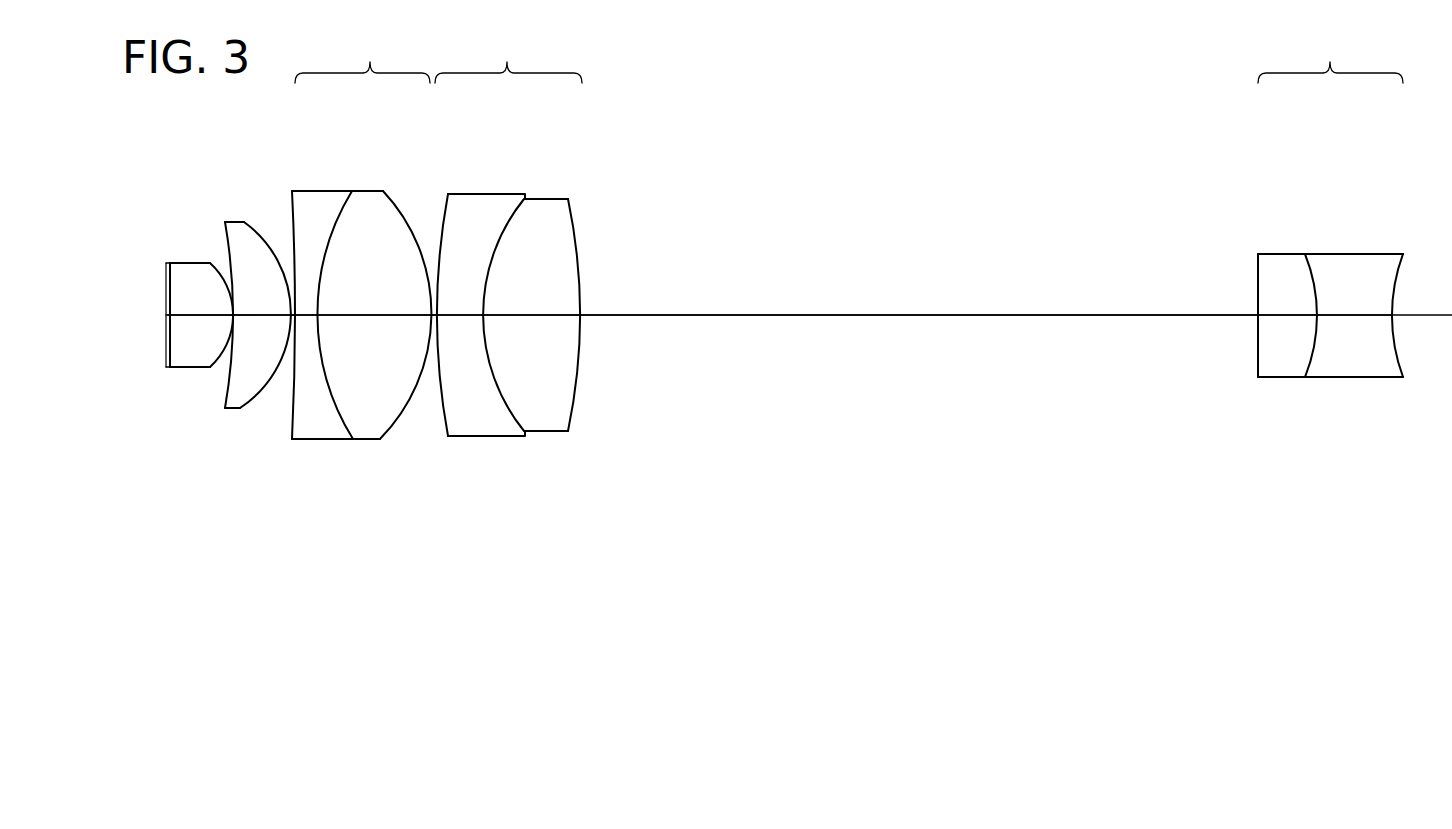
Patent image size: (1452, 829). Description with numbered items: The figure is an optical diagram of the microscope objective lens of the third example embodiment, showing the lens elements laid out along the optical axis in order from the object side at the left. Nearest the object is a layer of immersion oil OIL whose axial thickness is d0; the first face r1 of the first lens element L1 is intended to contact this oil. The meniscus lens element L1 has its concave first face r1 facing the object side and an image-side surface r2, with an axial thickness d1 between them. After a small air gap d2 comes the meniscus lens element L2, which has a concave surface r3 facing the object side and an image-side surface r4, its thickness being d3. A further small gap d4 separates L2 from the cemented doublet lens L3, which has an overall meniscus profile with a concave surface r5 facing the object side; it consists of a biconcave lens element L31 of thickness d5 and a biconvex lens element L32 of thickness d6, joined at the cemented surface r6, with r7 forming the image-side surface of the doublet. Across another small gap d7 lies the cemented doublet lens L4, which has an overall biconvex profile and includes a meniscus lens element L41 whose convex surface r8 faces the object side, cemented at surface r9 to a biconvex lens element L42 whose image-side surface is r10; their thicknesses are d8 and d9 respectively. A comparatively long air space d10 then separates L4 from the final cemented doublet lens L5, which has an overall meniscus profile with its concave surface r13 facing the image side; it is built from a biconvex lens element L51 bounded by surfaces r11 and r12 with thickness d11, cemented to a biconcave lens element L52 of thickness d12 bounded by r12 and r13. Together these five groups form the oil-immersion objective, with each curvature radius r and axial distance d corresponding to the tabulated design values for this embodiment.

The oil OIL is at (168, 323).
The axial distance of oil d0 is at (170, 309).
The axial thickness of L1 d1 is at (201, 304).
The axial distance between L1 and L2 d2 is at (216, 360).
The axial thickness of L2 d3 is at (263, 304).
The axial distance between L2 and L3 d4 is at (289, 340).
The axial thickness of L31 d5 is at (305, 320).
The axial thickness of L32 d6 is at (375, 304).
The axial distance between L3 and L4 d7 is at (423, 320).
The axial thickness of L41 d8 is at (460, 304).
The axial thickness of L42 d9 is at (531, 304).
The axial distance between L4 and L5 d10 is at (919, 301).
The axial thickness of L51 d11 is at (1287, 304).
The axial thickness of L52 d12 is at (1354, 304).
The first face r1 is at (172, 324).
The image-side surface of L1 r2 is at (210, 263).
The object-side surface of L2 r3 is at (225, 250).
The image-side surface of L2 r4 is at (249, 222).
The object-side surface of L3 r5 is at (292, 205).
The cemented surface of L3 r6 is at (350, 197).
The image-side surface of L3 r7 is at (388, 195).
The object-side surface of L4 r8 is at (450, 202).
The cemented surface of L4 r9 is at (518, 203).
The image-side surface of L4 r10 is at (577, 203).
The object-side surface of L5 r11 is at (1262, 258).
The cemented surface of L5 r12 is at (1306, 256).
The image-side surface of L5 r13 is at (1396, 274).
The meniscus lens element L1 is at (183, 352).
The meniscus lens element L2 is at (236, 409).
The cemented doublet lens L3 is at (362, 60).
The biconcave lens element L31 is at (312, 428).
The biconvex lens element L32 is at (368, 430).
The cemented doublet lens L4 is at (508, 60).
The meniscus lens element L41 is at (484, 425).
The biconvex lens element L42 is at (544, 418).
The cemented doublet lens L5 is at (1330, 59).
The biconvex lens element L51 is at (1283, 369).
The biconcave lens element L52 is at (1364, 369).